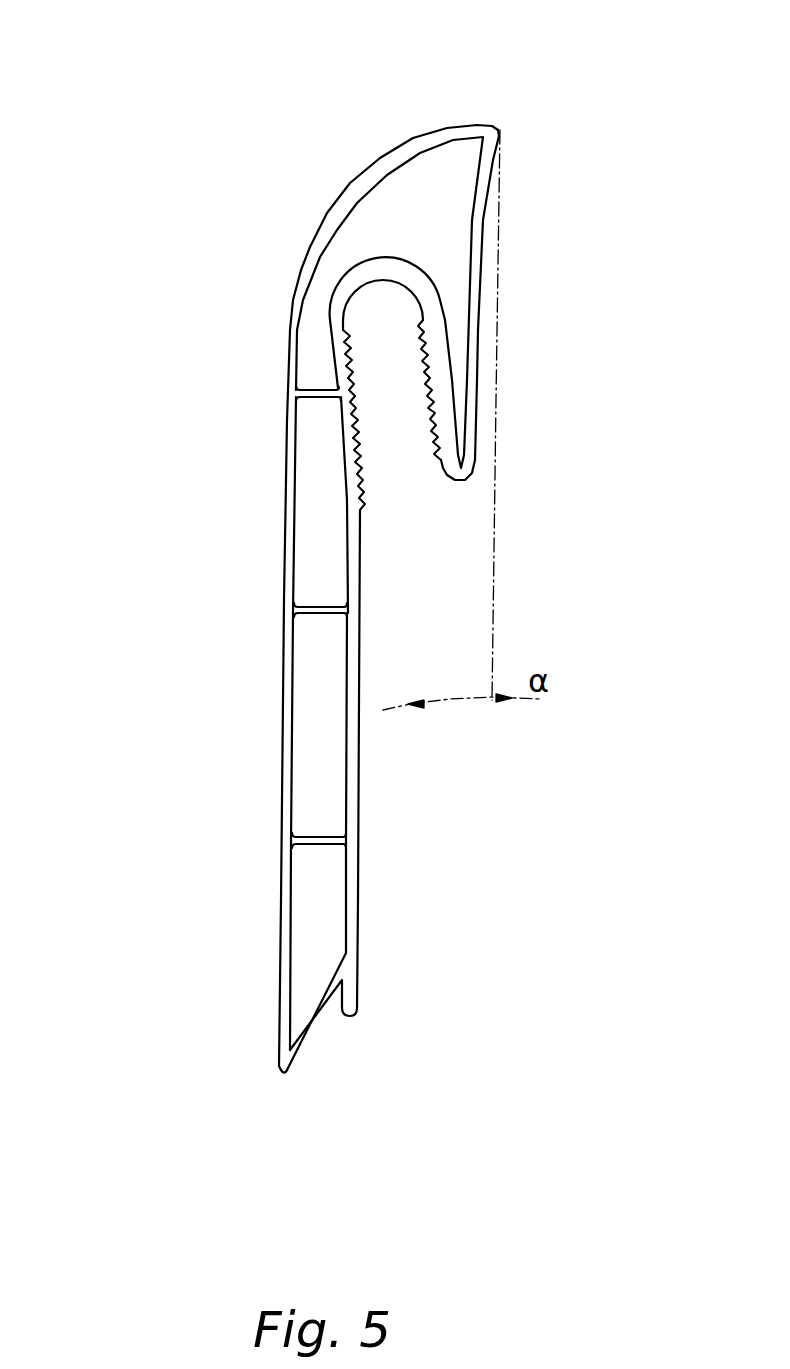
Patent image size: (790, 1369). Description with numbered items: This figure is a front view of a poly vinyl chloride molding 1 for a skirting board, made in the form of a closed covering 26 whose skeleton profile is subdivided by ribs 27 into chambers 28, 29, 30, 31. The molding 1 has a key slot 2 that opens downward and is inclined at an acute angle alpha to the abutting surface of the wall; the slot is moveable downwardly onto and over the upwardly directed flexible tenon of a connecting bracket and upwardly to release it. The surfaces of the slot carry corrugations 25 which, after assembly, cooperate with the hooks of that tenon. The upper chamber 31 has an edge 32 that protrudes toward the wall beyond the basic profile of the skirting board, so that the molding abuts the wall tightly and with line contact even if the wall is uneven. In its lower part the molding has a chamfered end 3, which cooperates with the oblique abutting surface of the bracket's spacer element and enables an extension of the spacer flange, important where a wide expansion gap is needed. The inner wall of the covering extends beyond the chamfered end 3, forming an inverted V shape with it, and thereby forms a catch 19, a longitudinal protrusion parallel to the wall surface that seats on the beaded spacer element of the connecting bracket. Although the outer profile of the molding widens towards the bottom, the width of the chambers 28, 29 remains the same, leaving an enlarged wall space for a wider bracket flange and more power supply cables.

The molding 1 is at (325, 215).
The key slot 2 is at (365, 397).
The chamfered end 3 is at (312, 1038).
The catch 19 is at (358, 1008).
The corrugations 25 is at (437, 384).
The closed covering 26 is at (298, 683).
The ribs 27 is at (293, 378).
The chamber 28 is at (315, 923).
The chamber 29 is at (313, 724).
The chamber 30 is at (317, 512).
The upper chamber 31 is at (432, 183).
The edge 32 is at (500, 127).